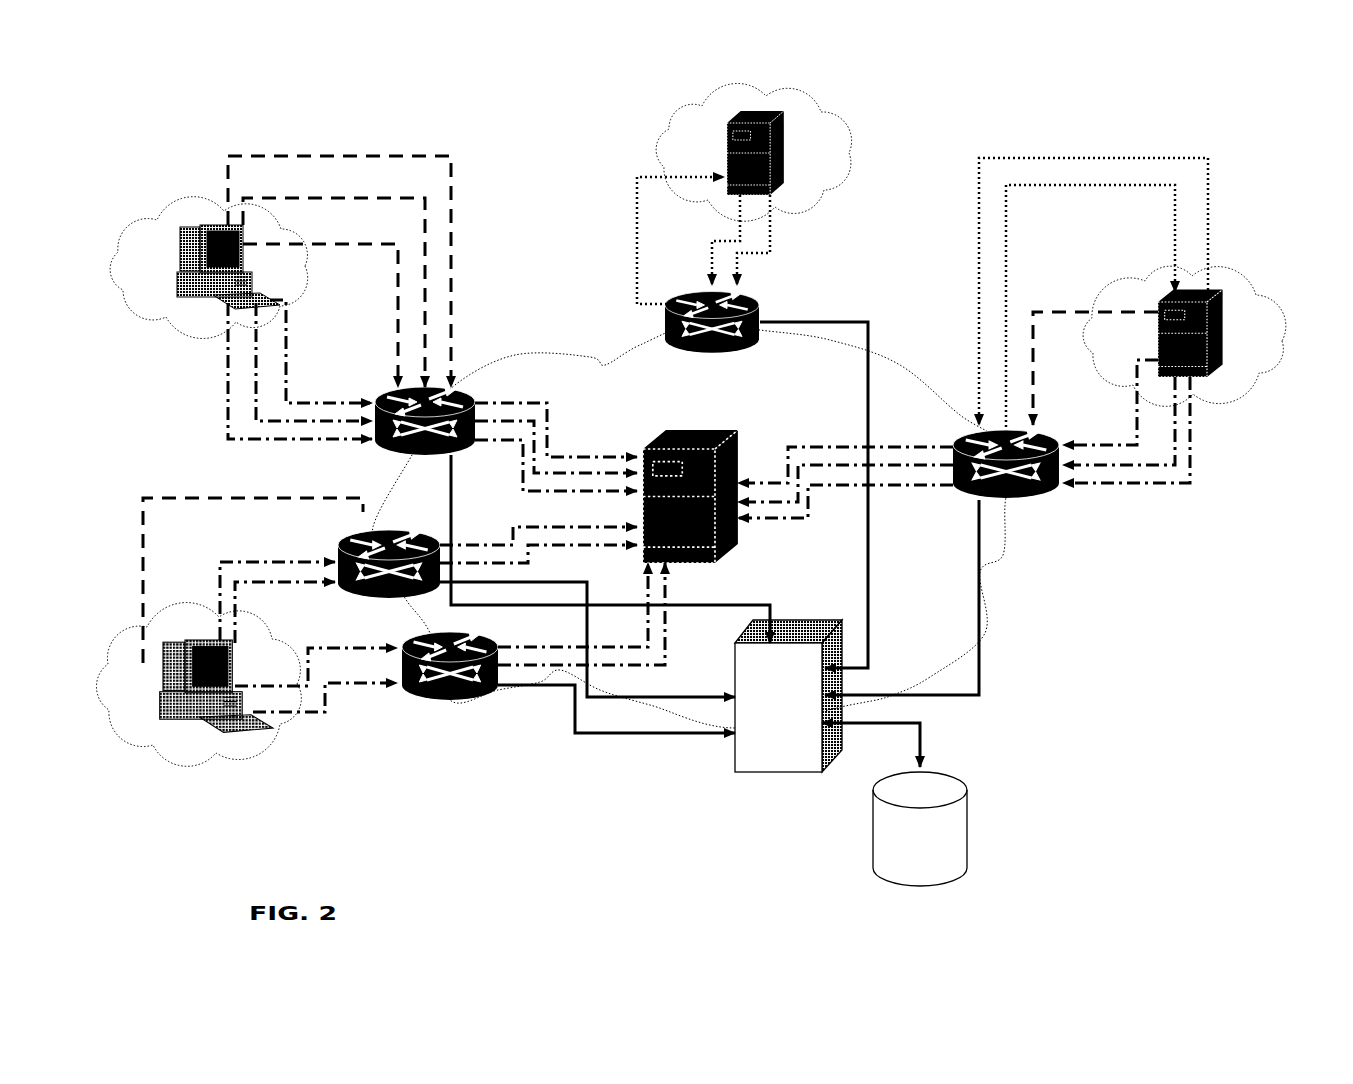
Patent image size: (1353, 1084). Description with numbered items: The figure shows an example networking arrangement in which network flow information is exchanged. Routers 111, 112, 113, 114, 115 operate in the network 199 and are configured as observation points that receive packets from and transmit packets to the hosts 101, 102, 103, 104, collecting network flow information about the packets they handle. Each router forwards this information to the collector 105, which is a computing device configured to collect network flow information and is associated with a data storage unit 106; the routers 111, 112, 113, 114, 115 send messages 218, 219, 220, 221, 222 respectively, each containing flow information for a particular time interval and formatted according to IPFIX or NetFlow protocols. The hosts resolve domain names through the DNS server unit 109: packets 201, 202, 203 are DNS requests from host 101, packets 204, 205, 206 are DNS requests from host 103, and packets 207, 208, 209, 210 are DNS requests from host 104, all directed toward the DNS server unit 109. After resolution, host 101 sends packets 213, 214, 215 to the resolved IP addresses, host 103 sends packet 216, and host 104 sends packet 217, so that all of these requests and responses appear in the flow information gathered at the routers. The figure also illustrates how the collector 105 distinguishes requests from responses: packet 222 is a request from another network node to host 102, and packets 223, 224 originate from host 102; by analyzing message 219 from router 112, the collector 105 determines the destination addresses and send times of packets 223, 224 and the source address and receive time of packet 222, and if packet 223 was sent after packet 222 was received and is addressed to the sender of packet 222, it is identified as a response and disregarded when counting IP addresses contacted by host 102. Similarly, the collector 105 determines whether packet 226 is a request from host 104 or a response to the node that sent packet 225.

The host 101 is at (183, 232).
The host 102 is at (783, 160).
The host 103 is at (1207, 380).
The host 104 is at (192, 720).
The collector 105 is at (788, 696).
The data storage unit 106 is at (894, 804).
The DNS server unit 109 is at (735, 545).
The router 111 is at (375, 395).
The router 112 is at (760, 305).
The router 113 is at (1030, 500).
The router 114 is at (450, 705).
The router 115 is at (390, 530).
The network 199 is at (1003, 555).
The packet 201 is at (228, 432).
The packet 202 is at (255, 365).
The packet 203 is at (286, 355).
The packet 204 is at (1137, 400).
The packet 205 is at (1177, 448).
The packet 206 is at (1178, 487).
The packet 207 is at (310, 714).
The packet 208 is at (312, 648).
The packet 209 is at (235, 585).
The packet 210 is at (222, 562).
The packet 213 is at (328, 244).
The packet 214 is at (318, 198).
The packet 215 is at (343, 156).
The packet 216 is at (1060, 312).
The packet 217 is at (143, 548).
The message 218 is at (453, 485).
The message 219 is at (868, 330).
The message 220 is at (979, 617).
The message 221 is at (595, 733).
The message 222 is at (637, 228).
The packet 223 is at (712, 241).
The packet 224 is at (770, 253).
The packet 225 is at (1055, 185).
The packet 226 is at (1040, 158).